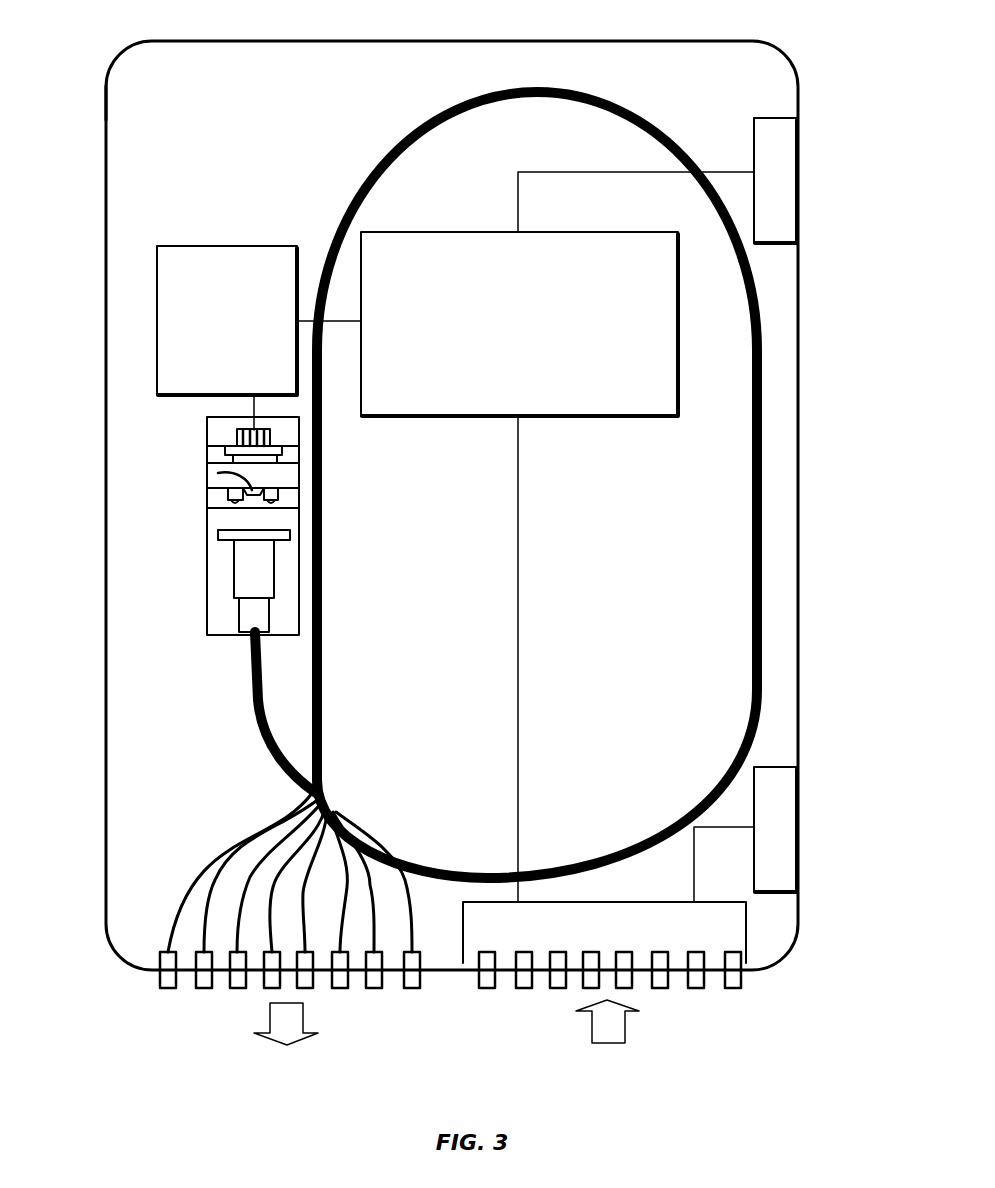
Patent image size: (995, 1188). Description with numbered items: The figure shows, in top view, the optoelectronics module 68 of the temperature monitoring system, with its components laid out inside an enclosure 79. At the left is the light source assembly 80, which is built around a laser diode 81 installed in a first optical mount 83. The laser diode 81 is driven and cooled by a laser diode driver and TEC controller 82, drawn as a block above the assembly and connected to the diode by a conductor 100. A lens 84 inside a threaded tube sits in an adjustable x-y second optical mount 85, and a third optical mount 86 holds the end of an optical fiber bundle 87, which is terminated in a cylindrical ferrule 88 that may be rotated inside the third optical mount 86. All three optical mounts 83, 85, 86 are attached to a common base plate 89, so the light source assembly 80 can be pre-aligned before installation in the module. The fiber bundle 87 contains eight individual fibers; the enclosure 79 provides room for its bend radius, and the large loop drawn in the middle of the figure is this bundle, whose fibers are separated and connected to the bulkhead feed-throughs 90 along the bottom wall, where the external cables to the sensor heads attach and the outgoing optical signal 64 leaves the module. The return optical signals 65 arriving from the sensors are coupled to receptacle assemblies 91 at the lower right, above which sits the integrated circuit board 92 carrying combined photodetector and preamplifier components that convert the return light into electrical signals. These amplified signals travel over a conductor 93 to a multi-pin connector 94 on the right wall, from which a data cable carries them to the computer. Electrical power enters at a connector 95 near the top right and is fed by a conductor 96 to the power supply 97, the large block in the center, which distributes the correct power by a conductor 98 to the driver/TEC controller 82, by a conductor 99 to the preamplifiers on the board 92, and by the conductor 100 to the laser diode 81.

The optoelectronics module 68 is at (130, 36).
The enclosure 79 is at (463, 41).
The laser diode driver and TEC controller 82 is at (244, 246).
The conductor 100 is at (252, 403).
The conductor 98 is at (337, 323).
The power supply 97 is at (608, 419).
The conductor 96 is at (565, 171).
The connector 95 is at (784, 167).
The conductor 99 is at (518, 560).
The multi-pin connector 94 is at (782, 810).
The conductor 93 is at (694, 866).
The integrated circuit board 92 is at (738, 925).
The light source assembly 80 is at (170, 528).
The laser diode 81 is at (207, 452).
The first optical mount 83 is at (213, 463).
The lens 84 is at (228, 487).
The second optical mount 85 is at (220, 502).
The third optical mount 86 is at (220, 522).
The common base plate 89 is at (218, 553).
The cylindrical ferrule 88 is at (243, 613).
The optical fiber bundle 87 is at (240, 690).
The bulkhead feed-throughs 90 is at (168, 988).
The receptacle assemblies 91 is at (660, 988).
The optical signal 64 is at (270, 1023).
The return optical signal 65 is at (625, 1036).